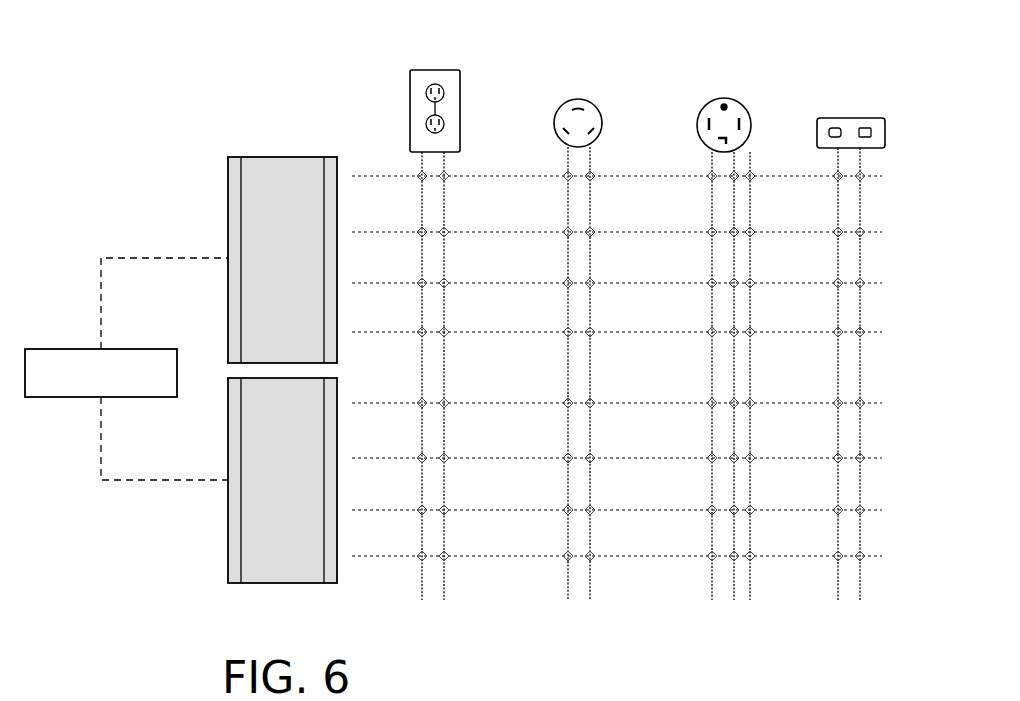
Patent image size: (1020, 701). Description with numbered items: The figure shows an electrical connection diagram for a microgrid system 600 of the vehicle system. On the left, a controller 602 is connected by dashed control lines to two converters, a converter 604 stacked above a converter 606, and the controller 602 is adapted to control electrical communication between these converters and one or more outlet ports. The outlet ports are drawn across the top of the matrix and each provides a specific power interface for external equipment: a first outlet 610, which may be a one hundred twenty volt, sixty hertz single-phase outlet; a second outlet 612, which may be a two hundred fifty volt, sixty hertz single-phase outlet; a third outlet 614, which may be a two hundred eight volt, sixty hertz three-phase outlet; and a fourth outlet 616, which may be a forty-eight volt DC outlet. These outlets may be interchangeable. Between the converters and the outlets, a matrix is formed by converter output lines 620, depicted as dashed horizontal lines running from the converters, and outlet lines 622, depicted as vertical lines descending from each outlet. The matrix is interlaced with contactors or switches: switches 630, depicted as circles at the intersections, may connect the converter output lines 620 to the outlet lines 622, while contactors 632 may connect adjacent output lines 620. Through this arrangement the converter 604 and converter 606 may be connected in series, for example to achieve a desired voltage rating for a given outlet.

The microgrid system 600 is at (171, 156).
The controller 602 is at (53, 349).
The converter 604 is at (278, 157).
The converter 606 is at (283, 583).
The first outlet 610 is at (438, 70).
The second outlet 612 is at (580, 99).
The third outlet 614 is at (720, 98).
The fourth outlet 616 is at (853, 118).
The converter output lines 620 is at (392, 232).
The outlet lines 622 is at (568, 592).
The switches 630 is at (565, 170).
The contactors 632 is at (710, 530).